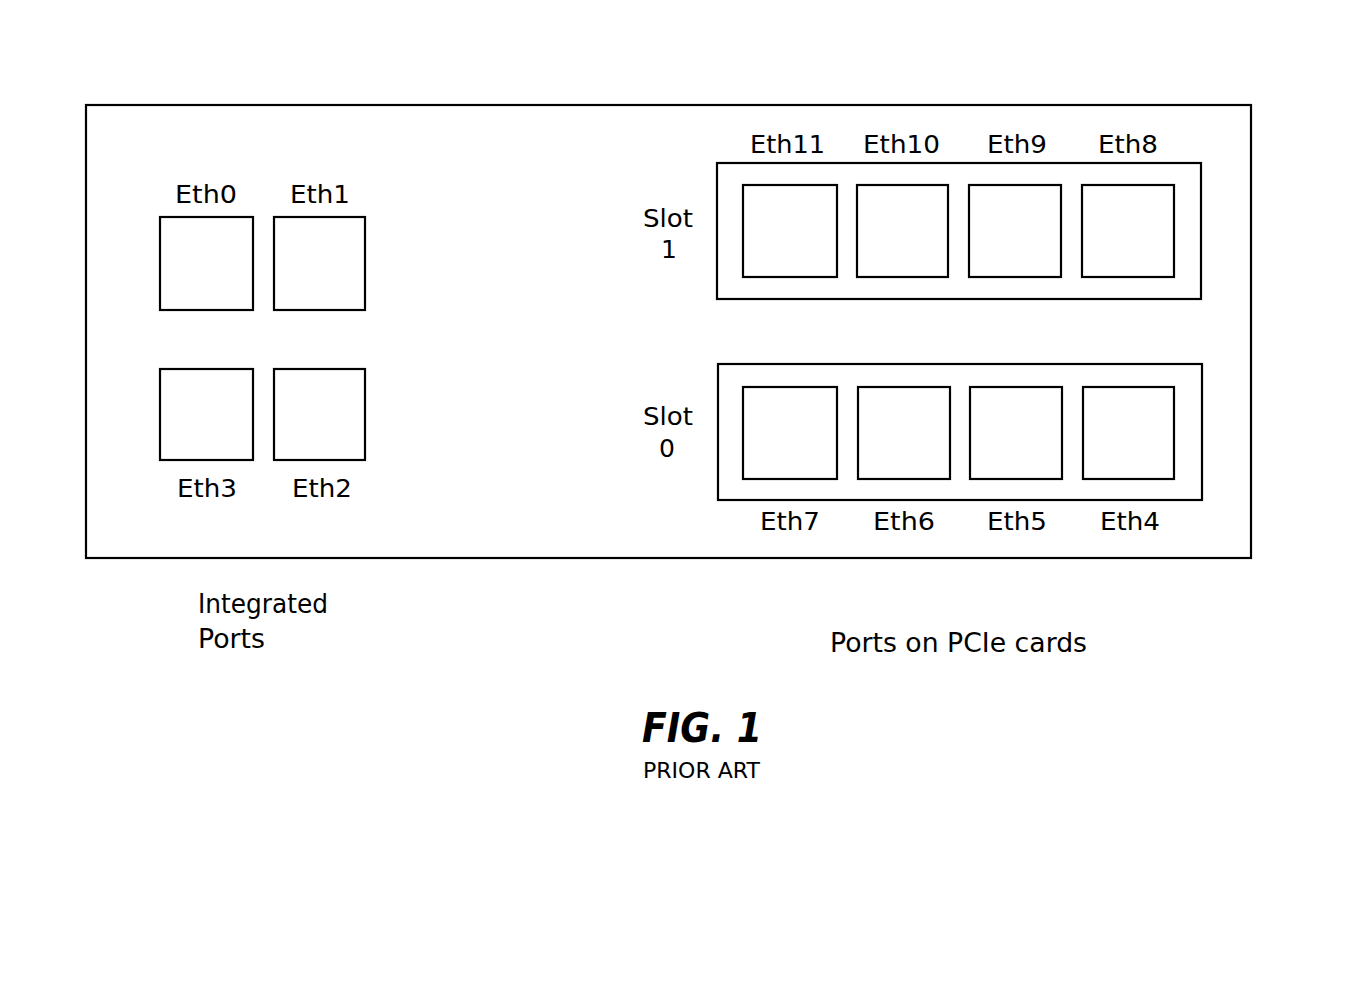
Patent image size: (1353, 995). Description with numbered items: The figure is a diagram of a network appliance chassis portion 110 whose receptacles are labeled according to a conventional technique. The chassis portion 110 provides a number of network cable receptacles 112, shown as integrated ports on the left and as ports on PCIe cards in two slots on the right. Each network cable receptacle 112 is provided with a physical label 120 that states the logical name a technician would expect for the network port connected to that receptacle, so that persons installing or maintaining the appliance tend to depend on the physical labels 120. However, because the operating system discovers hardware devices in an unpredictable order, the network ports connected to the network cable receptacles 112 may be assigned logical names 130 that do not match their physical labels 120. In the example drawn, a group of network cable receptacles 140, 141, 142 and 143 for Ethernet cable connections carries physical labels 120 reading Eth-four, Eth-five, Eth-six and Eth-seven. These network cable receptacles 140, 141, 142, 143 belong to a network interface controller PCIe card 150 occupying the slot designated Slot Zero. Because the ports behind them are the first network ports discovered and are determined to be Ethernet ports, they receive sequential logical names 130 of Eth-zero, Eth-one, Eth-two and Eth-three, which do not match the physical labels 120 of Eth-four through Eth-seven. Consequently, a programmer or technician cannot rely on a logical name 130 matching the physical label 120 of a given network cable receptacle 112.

The network appliance chassis portion 110 is at (155, 153).
The network cable receptacle 112 is at (320, 310).
The physical label 120 is at (714, 143).
The logical name 130 is at (177, 293).
The network cable receptacle 140 is at (1151, 424).
The network cable receptacle 141 is at (1039, 424).
The network cable receptacle 142 is at (927, 424).
The network cable receptacle 143 is at (812, 424).
The network interface controller (NIC) PCIe card 150 is at (1202, 432).